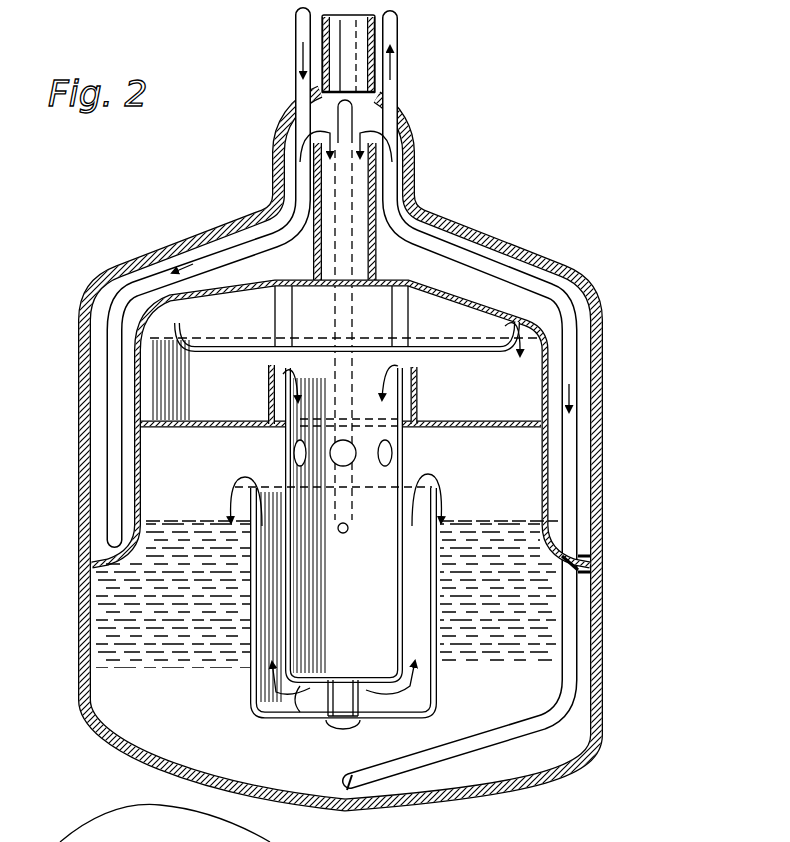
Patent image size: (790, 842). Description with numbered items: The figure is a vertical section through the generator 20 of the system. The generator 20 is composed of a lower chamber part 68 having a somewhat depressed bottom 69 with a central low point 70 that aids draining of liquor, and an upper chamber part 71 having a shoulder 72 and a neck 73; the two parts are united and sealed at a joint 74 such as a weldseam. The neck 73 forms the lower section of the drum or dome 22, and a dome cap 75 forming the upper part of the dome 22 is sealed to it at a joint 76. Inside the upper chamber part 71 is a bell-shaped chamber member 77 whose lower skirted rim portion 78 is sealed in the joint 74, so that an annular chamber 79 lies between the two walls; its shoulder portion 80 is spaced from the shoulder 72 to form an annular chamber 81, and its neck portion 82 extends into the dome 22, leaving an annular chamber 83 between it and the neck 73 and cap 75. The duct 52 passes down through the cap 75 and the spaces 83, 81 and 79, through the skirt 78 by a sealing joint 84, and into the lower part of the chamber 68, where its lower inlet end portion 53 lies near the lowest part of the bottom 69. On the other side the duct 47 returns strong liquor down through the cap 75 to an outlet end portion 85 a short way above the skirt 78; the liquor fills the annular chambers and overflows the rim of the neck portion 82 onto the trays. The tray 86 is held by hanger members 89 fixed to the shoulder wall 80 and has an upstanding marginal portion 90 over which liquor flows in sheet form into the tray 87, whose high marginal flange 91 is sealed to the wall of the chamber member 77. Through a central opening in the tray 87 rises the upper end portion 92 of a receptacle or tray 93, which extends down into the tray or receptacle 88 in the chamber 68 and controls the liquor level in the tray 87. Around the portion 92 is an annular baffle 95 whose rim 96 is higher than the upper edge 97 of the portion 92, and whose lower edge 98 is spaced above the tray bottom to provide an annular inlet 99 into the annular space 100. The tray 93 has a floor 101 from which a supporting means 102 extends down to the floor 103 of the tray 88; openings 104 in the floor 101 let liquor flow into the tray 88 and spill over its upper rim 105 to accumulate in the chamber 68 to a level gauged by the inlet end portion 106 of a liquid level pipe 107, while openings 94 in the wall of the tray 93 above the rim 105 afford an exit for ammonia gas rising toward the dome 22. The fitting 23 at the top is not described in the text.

The generator 20 is at (604, 457).
The drum or dome 22 is at (416, 134).
The inlet fitting tube 23 is at (374, 42).
The duct 47 is at (302, 52).
The duct 52 is at (395, 86).
The lower inlet end portion 53 is at (360, 784).
The lower chamber part 68 is at (603, 665).
The depressed bottom 69 is at (390, 810).
The central low point 70 is at (334, 810).
The upper chamber part 71 is at (600, 373).
The shoulder 72 is at (574, 280).
The neck 73 is at (420, 197).
The joint 74 is at (588, 573).
The dome cap 75 is at (408, 115).
The joint 76 is at (415, 176).
The bell-shaped chamber member 77 is at (139, 488).
The lower skirted rim portion 78 is at (603, 537).
The annular chamber 79 is at (580, 435).
The shoulder portion 80 is at (530, 292).
The annular chamber 81 is at (143, 280).
The neck portion 82 is at (383, 268).
The annular chamber 83 is at (400, 163).
The sealing joint 84 is at (557, 572).
The outlet or discharge end portion 85 is at (106, 527).
The tray 86 is at (463, 353).
The tray 87 is at (490, 430).
The tray or receptacle 88 is at (249, 650).
The hanger members 89 is at (277, 318).
The upstanding marginal portion 90 is at (183, 342).
The marginal wall or flange 91 is at (148, 380).
The upper end portion 92 is at (300, 397).
The receptacle or tray 93 is at (282, 600).
The openings 94 is at (302, 462).
The annular wall or baffle 95 is at (267, 388).
The upper end or edge or rim 96 is at (267, 365).
The upper end or edge 97 is at (413, 368).
The lower end or edge 98 is at (262, 412).
The annular entry or inlet 99 is at (258, 428).
The annular space 100 is at (410, 402).
The lower wall or floor 101 is at (322, 700).
The supporting means 102 is at (322, 716).
The bottom wall or floor 103 is at (265, 720).
The openings 104 is at (380, 670).
The upper rim 105 is at (245, 480).
The inlet end portion 106 is at (344, 533).
The liquid level pipe or duct 107 is at (356, 118).